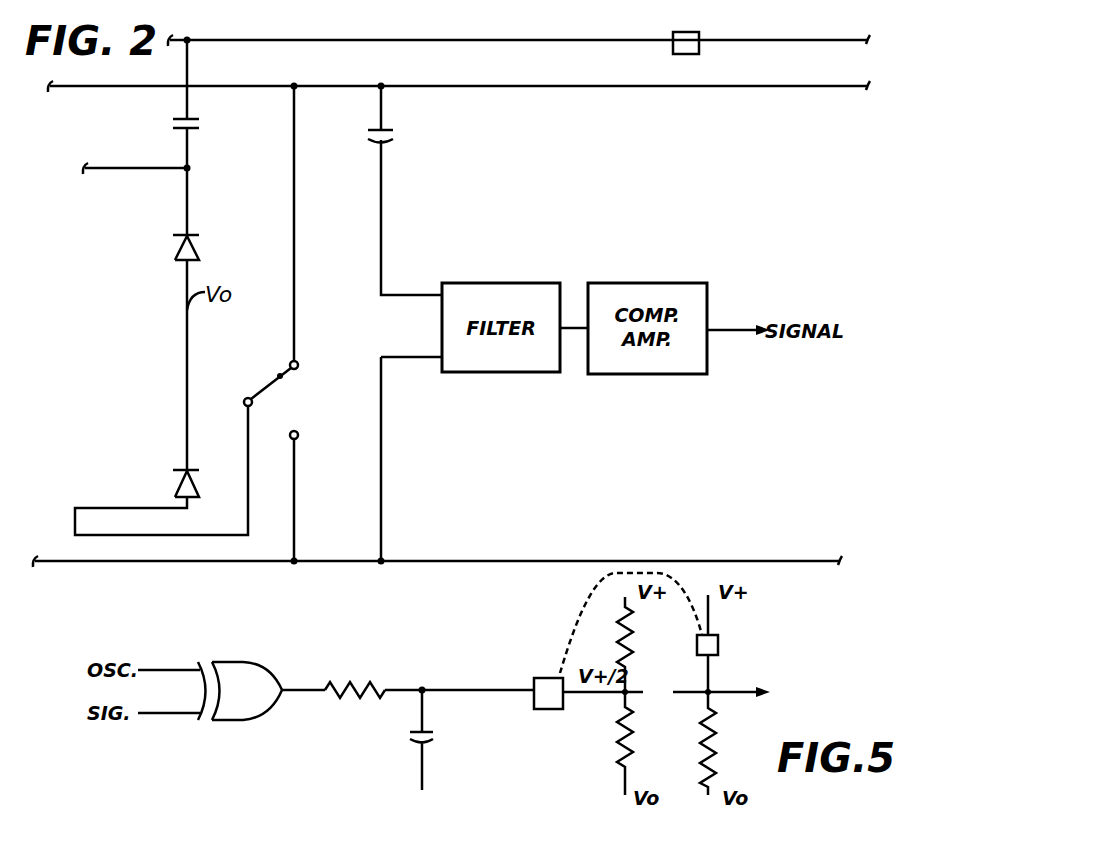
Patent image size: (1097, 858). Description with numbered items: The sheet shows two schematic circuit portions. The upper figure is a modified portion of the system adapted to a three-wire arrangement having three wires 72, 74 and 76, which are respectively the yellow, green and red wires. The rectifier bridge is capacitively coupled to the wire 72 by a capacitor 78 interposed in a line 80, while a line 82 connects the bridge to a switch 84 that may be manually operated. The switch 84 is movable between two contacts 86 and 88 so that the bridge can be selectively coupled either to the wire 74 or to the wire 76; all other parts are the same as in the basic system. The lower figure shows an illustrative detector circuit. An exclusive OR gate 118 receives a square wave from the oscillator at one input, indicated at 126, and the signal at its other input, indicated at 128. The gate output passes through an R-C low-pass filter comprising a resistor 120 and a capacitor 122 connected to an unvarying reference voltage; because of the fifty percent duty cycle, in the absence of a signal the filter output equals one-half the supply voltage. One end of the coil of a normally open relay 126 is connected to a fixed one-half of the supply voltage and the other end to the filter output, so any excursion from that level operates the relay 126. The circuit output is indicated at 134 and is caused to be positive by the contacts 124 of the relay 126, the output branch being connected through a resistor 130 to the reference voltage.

In FIG. 2, the wire 72 is at (455, 40).
In FIG. 2, the wire 74 is at (487, 86).
In FIG. 2, the wire 76 is at (158, 565).
In FIG. 2, the capacitor 78 is at (199, 118).
In FIG. 2, the line 80 is at (186, 97).
In FIG. 2, the line 82 is at (247, 446).
In FIG. 2, the switch 84 is at (273, 383).
In FIG. 2, the contact 86 is at (297, 362).
In FIG. 2, the contact 88 is at (297, 432).
In FIG. 5, the exclusive OR gate 118 is at (247, 665).
In FIG. 5, the resistor 120 is at (353, 681).
In FIG. 5, the capacitor 122 is at (427, 731).
In FIG. 5, the contacts 124 is at (718, 642).
In FIG. 5, the normally open relay 126 is at (165, 670).
In FIG. 5, the signal input 128 is at (156, 713).
In FIG. 5, the resistor 130 is at (717, 738).
In FIG. 5, the output 134 is at (735, 690).